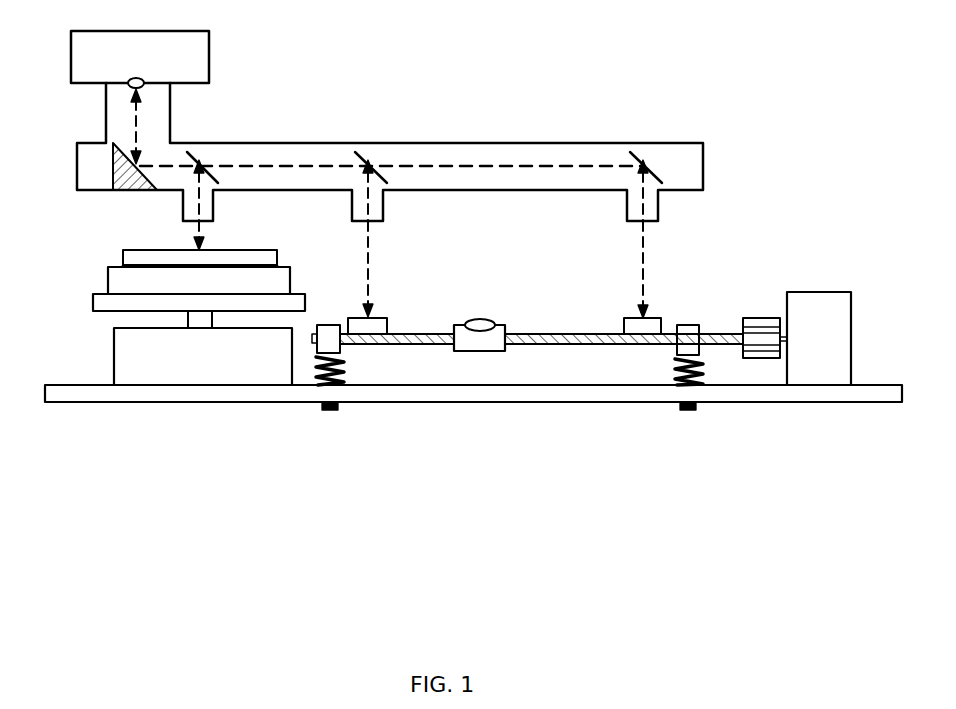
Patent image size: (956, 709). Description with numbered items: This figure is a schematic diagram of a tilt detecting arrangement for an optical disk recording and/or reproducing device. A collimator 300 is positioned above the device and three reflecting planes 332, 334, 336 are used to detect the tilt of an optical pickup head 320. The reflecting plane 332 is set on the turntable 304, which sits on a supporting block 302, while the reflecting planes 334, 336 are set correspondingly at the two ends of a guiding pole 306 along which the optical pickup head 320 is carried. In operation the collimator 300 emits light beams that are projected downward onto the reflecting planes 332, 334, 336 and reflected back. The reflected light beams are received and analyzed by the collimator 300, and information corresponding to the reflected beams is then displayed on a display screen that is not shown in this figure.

The collimator 300 is at (224, 140).
The stage base block 302 is at (128, 348).
The turntable 304 is at (117, 281).
The guiding pole 306 is at (541, 335).
The optical pickup head 320 is at (478, 320).
The reflecting plane 332 is at (145, 250).
The reflecting plane 334 is at (380, 317).
The reflecting plane 336 is at (650, 318).